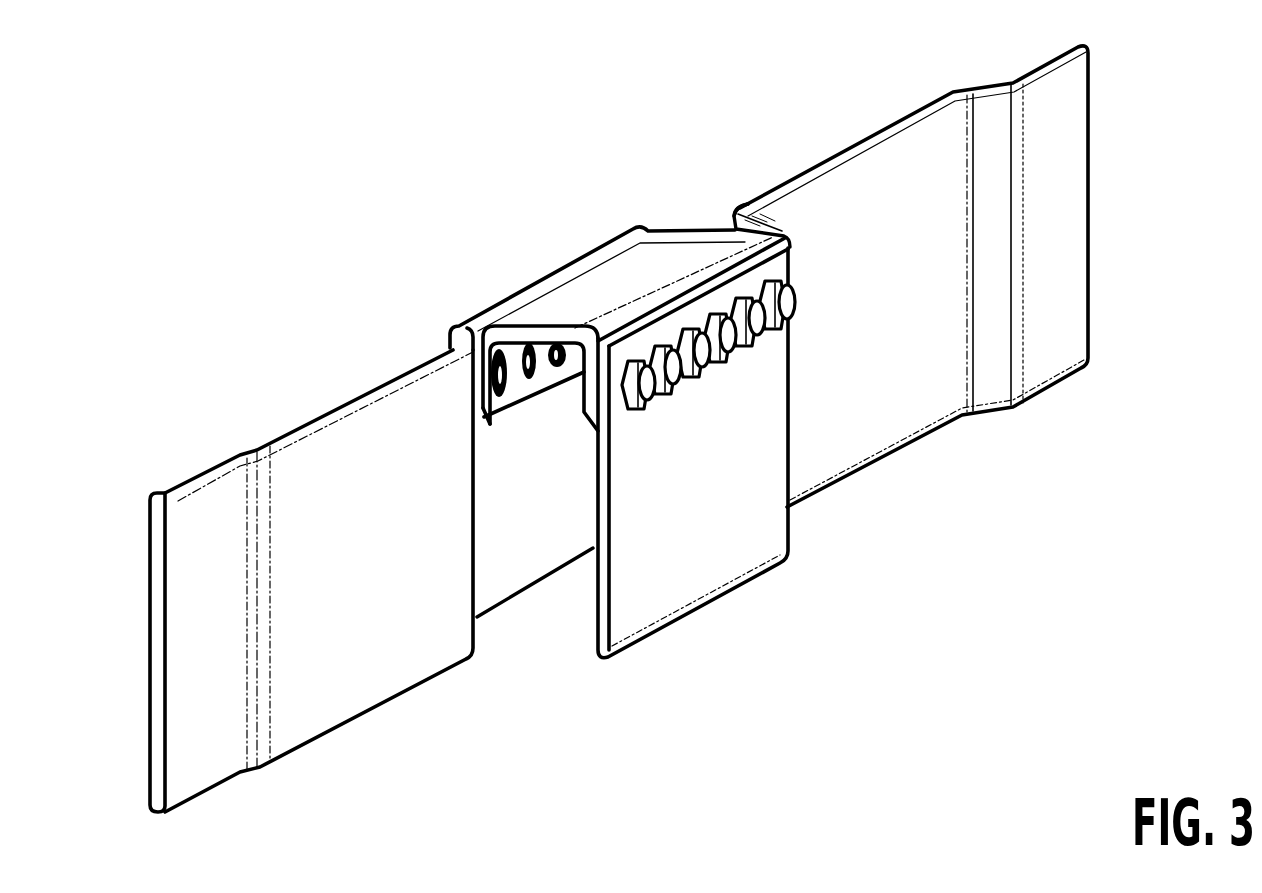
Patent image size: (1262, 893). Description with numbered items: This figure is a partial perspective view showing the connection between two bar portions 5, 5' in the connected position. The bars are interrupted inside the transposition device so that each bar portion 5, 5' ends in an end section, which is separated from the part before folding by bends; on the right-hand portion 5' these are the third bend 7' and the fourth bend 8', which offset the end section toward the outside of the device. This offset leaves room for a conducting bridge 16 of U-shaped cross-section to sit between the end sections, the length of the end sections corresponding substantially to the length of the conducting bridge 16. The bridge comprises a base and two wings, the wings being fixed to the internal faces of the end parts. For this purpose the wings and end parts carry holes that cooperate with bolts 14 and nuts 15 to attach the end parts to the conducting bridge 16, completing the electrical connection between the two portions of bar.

The bar portion 5 is at (311, 535).
The bar portion 5' is at (977, 276).
The third bend 7' is at (808, 142).
The fourth bend 8' is at (778, 126).
The bolts 14 is at (787, 327).
The nuts 15 is at (496, 412).
The conducting bridge 16 is at (700, 423).